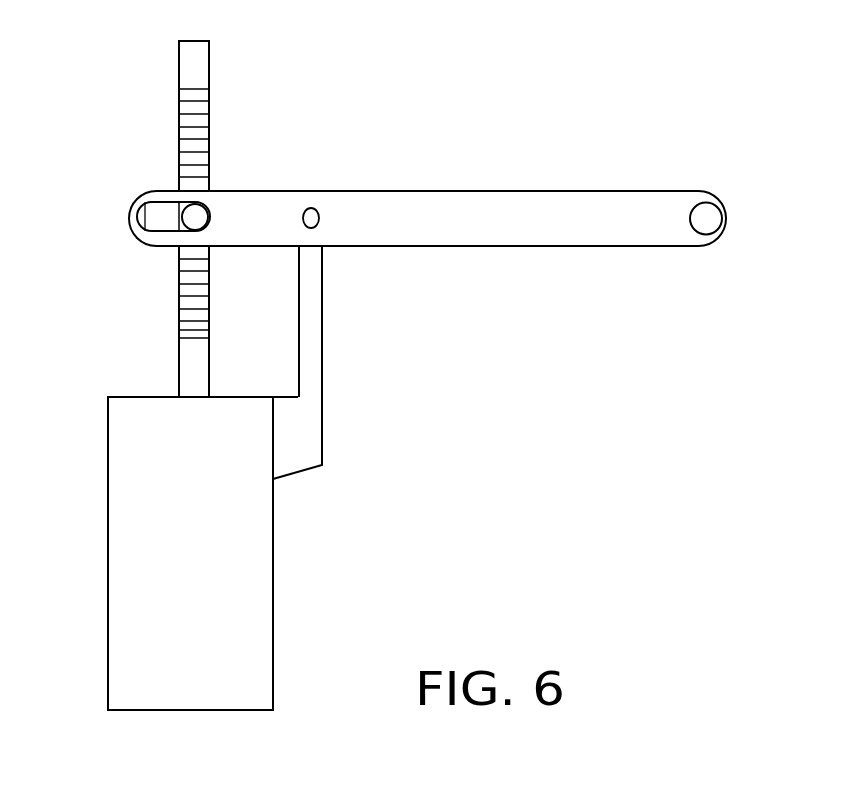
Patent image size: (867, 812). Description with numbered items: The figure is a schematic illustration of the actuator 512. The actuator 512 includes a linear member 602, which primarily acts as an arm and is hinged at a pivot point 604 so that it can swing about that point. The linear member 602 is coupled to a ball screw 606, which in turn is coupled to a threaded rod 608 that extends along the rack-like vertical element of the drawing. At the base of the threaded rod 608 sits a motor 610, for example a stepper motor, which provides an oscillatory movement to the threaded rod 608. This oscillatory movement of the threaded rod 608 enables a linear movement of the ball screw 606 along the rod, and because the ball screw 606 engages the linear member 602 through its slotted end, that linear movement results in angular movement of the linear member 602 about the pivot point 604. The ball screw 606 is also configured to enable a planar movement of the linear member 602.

The actuator 512 is at (611, 73).
The linear member 602 is at (410, 201).
The pivot point 604 is at (314, 206).
The ball screw 606 is at (153, 216).
The threaded rod 608 is at (190, 68).
The motor 610 is at (252, 548).